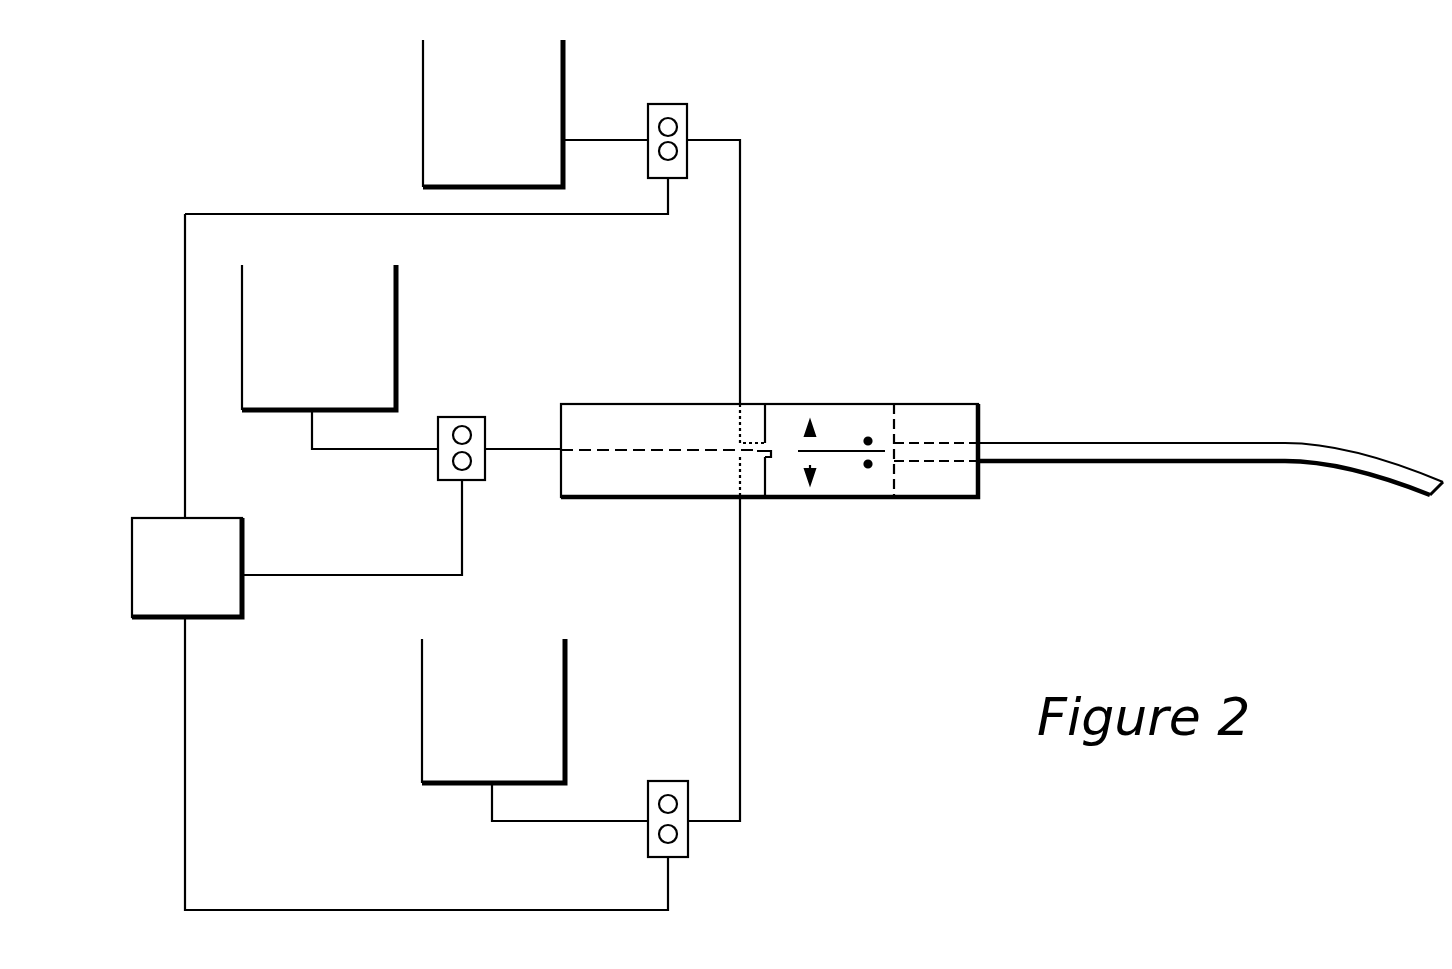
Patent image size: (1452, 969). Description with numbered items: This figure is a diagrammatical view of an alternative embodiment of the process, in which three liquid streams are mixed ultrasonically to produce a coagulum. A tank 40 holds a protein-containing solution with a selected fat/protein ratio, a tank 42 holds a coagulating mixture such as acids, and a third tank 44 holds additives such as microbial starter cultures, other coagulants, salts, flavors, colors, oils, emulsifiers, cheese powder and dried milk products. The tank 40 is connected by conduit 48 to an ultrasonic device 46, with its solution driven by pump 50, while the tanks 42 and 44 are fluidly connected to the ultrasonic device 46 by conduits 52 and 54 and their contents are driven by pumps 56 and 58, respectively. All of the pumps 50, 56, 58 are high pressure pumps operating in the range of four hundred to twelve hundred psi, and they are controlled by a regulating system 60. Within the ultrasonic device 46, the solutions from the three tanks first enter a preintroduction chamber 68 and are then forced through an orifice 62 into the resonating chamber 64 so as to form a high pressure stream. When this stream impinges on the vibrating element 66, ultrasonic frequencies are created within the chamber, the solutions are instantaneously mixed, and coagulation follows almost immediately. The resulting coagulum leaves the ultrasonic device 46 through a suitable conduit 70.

The tank 40 is at (396, 328).
The tank 42 is at (553, 100).
The third tank 44 is at (565, 736).
The ultrasonic device 46 is at (784, 401).
The conduit 48 is at (527, 447).
The pump 50 is at (487, 481).
The conduit 52 is at (741, 253).
The conduit 54 is at (744, 736).
The pump 56 is at (690, 125).
The pump 58 is at (688, 840).
The regulating system 60 is at (242, 590).
The orifice 62 is at (767, 474).
The resonating chamber 64 is at (778, 450).
The vibrating element 66 is at (914, 485).
The preintroduction chamber 68 is at (723, 462).
The conduit 70 is at (1070, 442).